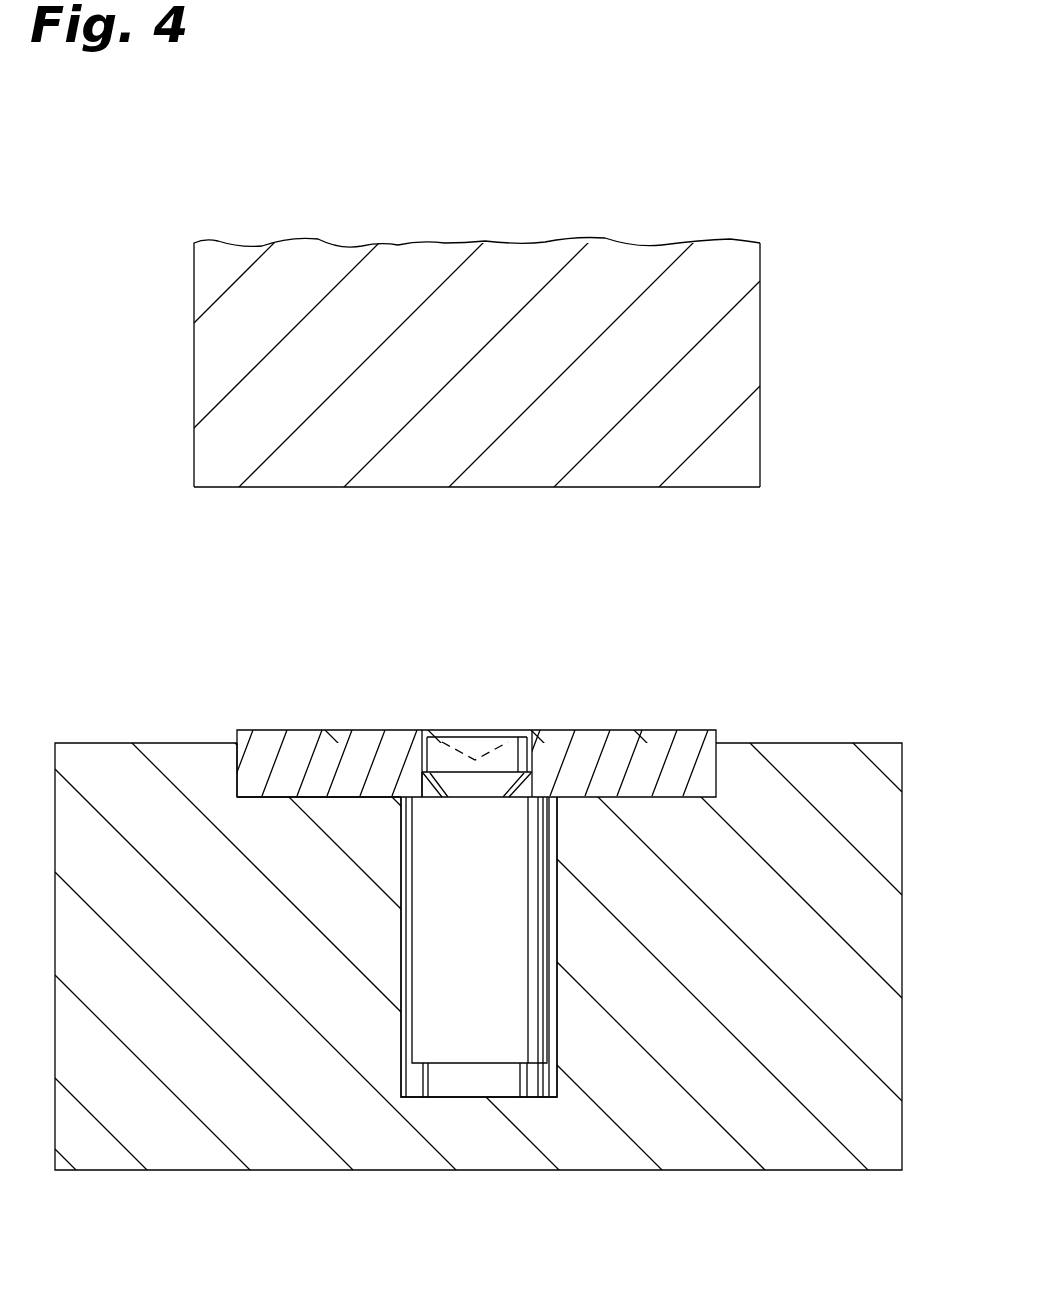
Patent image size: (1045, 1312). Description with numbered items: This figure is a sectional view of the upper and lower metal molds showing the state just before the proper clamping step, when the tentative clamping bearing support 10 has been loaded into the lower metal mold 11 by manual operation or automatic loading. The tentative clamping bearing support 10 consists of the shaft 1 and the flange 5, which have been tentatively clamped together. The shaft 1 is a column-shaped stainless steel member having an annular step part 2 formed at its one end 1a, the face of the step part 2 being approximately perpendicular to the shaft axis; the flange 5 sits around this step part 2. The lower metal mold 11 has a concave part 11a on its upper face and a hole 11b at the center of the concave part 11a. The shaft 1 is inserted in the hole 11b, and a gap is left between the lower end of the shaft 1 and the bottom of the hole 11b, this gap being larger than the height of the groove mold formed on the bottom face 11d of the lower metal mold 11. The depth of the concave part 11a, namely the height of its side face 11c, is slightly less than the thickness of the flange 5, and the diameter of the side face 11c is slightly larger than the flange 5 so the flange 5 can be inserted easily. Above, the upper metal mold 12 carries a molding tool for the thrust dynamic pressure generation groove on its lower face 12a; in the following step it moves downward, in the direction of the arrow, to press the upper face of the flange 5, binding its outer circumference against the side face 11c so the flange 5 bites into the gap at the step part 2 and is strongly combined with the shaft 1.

The shaft 1 is at (461, 953).
The one end of the shaft 1a is at (440, 758).
The step part 2 is at (420, 779).
The flange 5 is at (697, 758).
The tentative clamping bearing support 10 is at (570, 922).
The lower metal mold 11 is at (186, 1127).
The concave part 11a is at (230, 774).
The hole 11b is at (405, 1042).
The side face 11c is at (244, 763).
The bottom face 11d is at (308, 790).
The upper metal mold 12 is at (215, 342).
The lower face of the upper metal mold 12a is at (258, 487).